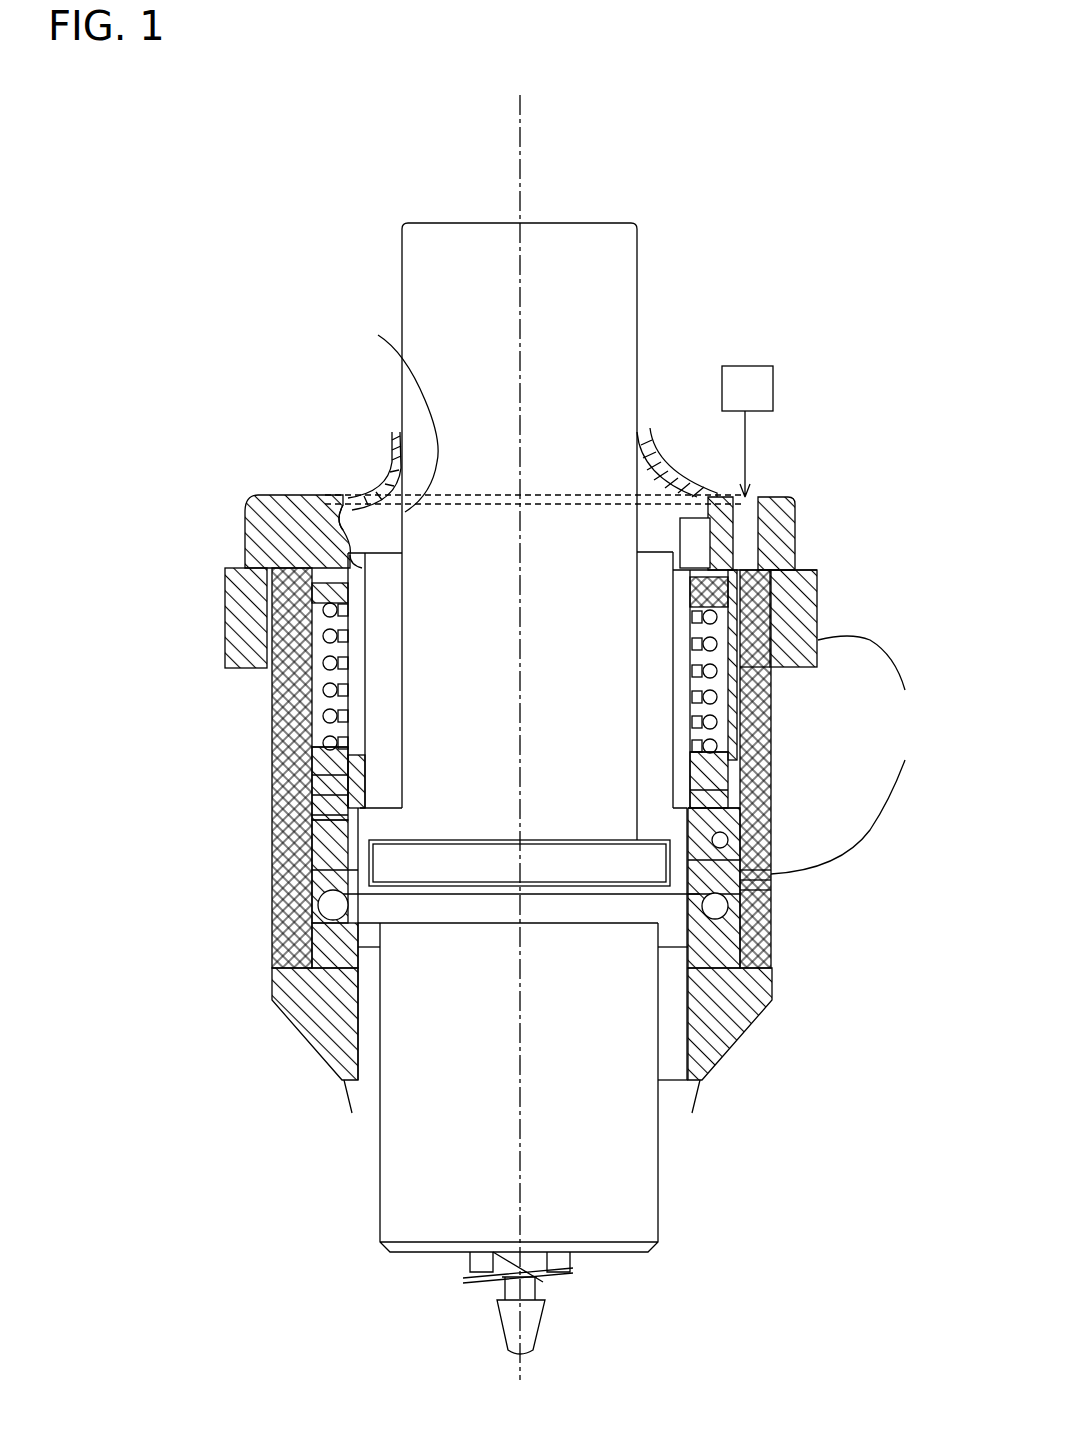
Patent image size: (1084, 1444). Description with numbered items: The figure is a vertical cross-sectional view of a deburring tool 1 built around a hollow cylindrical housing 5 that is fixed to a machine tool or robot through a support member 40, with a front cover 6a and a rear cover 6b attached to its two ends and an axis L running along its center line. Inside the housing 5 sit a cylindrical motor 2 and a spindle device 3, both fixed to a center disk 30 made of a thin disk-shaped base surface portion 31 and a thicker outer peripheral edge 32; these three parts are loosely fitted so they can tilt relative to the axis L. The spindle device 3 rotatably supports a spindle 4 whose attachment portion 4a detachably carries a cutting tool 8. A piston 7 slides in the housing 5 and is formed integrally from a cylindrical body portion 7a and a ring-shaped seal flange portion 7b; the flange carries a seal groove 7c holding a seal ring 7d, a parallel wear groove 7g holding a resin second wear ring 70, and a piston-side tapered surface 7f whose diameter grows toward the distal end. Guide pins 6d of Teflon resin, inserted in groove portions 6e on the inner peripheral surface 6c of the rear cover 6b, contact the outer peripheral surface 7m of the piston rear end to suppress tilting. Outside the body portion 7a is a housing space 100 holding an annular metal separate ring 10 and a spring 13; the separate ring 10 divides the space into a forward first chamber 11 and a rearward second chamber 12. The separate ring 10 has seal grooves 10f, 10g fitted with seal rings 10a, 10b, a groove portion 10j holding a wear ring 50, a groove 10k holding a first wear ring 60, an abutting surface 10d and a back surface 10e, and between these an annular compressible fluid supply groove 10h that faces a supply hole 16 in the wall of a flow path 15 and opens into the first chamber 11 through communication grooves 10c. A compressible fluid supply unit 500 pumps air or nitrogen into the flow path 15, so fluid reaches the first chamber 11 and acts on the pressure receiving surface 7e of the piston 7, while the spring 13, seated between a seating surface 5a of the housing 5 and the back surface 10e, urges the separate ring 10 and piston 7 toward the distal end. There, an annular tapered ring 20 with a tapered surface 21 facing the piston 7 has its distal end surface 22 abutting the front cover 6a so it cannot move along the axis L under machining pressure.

The axis L is at (522, 150).
The deburring tool 1 is at (714, 250).
The motor 2 is at (415, 425).
The spindle device 3 is at (636, 1195).
The spindle 4 is at (570, 1268).
The attachment portion 4a is at (537, 1285).
The housing 5 is at (803, 566).
The seating surface 5a is at (797, 528).
The front cover 6a is at (703, 1063).
The rear cover 6b is at (790, 497).
The inner peripheral surface 6c is at (342, 500).
The guide pin 6d is at (380, 488).
The groove portion 6e is at (290, 495).
The piston 7 is at (922, 688).
The body portion 7a is at (870, 674).
The seal flange portion 7b is at (831, 801).
The seal groove 7c is at (771, 880).
The seal ring 7d is at (771, 850).
The pressure receiving surface 7e is at (772, 735).
The piston-side tapered surface 7f is at (771, 894).
The wear groove 7g is at (300, 898).
The outer peripheral surface 7m is at (388, 412).
The cutting tool 8 is at (540, 1325).
The separate ring 10 is at (272, 753).
The seal ring 10a is at (300, 785).
The seal ring 10b is at (300, 820).
The communication groove 10c is at (300, 835).
The abutting surface 10d is at (519, 863).
The back surface 10e is at (688, 737).
The seal groove 10f is at (300, 773).
The seal groove 10g is at (272, 727).
The compressible fluid supply groove 10h is at (771, 812).
The groove portion 10j is at (688, 783).
The groove 10k is at (300, 793).
The first chamber 11 is at (300, 868).
The second chamber 12 is at (272, 685).
The spring 13 is at (773, 632).
The flow path 15 is at (818, 593).
The supply hole 16 is at (771, 780).
The tapered ring 20 is at (690, 968).
The tapered surface 21 is at (520, 1110).
The distal end surface 22 is at (295, 1020).
The center disk 30 is at (880, 897).
The base surface portion 31 is at (771, 932).
The outer peripheral edge 32 is at (771, 908).
The support member 40 is at (830, 566).
The wear ring 50 is at (688, 807).
The first wear ring 60 is at (300, 808).
The second wear ring 70 is at (745, 858).
The housing space 100 is at (236, 618).
The compressible fluid supply unit 500 is at (773, 388).